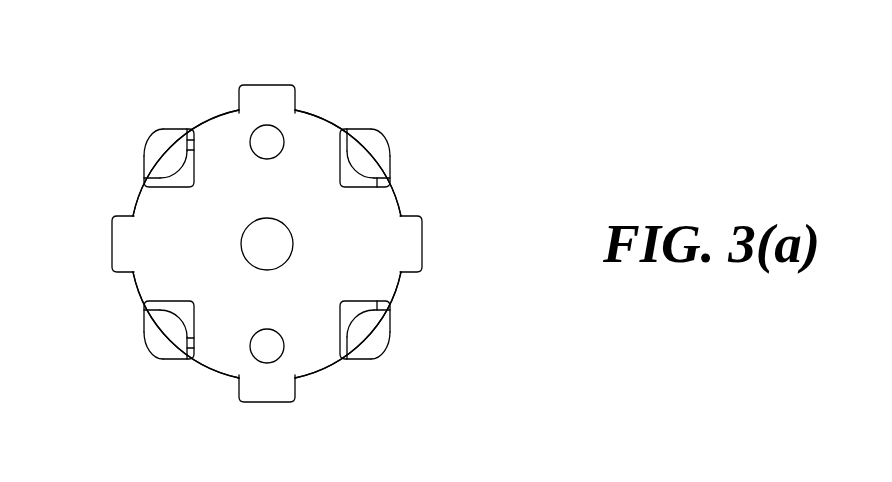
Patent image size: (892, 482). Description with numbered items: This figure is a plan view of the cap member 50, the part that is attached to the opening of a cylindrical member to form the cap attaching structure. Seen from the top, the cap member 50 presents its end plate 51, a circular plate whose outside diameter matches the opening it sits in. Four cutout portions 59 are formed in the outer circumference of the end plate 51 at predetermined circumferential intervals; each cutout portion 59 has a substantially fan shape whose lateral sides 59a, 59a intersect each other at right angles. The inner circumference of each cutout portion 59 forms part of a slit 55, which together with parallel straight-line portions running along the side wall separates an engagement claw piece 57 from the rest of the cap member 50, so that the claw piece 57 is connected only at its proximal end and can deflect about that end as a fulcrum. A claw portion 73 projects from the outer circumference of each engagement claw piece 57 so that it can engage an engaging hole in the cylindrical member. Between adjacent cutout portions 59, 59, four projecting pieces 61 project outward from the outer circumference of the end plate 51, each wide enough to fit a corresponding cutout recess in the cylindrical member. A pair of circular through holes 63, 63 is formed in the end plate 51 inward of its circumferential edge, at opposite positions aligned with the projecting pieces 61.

The cap member 50 is at (414, 163).
The end plate 51 is at (404, 199).
The slit 55 is at (192, 122).
The engagement claw piece 57 is at (368, 158).
The cutout portion 59 is at (343, 182).
The lateral side 59a is at (196, 147).
The projecting piece 61 is at (271, 85).
The circular through hole 63 is at (276, 144).
The claw portion 73 is at (377, 129).